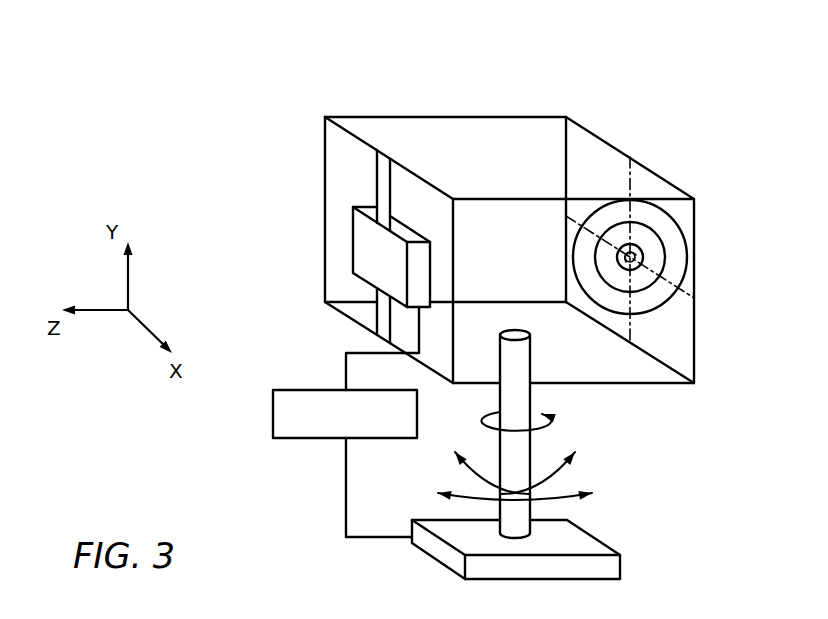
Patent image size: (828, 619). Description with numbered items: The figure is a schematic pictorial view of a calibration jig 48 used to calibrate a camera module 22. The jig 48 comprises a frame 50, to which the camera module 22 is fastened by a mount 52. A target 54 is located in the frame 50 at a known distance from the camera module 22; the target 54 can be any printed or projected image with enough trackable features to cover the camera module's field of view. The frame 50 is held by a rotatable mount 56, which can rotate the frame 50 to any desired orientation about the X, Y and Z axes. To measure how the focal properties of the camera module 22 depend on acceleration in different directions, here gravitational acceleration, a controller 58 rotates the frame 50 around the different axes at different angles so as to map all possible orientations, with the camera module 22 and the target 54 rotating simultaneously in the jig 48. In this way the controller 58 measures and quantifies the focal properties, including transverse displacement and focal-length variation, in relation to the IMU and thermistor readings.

The calibration jig 48 is at (214, 96).
The frame 50 is at (460, 117).
The mount 52 is at (378, 180).
The camera module 22 is at (353, 249).
The target 54 is at (664, 209).
The rotatable mount 56 is at (621, 570).
The controller 58 is at (300, 390).